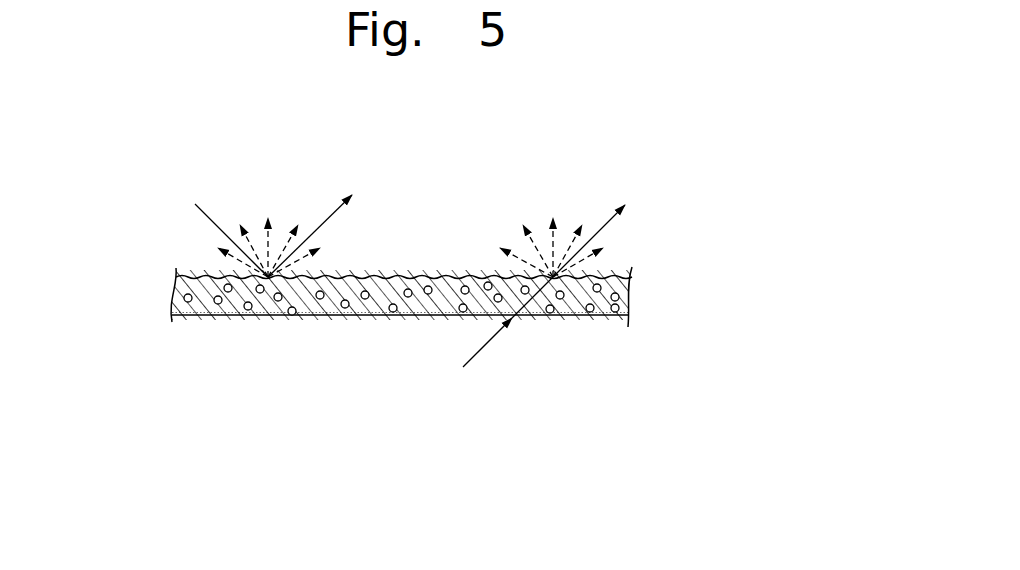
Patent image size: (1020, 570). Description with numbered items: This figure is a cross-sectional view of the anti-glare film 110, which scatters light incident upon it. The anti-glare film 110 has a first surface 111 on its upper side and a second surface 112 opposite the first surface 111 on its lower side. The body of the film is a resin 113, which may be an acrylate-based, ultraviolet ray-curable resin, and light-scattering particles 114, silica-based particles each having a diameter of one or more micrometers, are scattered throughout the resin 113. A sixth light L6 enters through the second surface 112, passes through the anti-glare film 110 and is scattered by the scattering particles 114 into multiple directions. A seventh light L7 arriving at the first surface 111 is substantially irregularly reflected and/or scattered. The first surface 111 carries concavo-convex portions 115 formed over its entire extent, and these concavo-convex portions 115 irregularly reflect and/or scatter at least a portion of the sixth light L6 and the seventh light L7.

The anti-glare film 110 is at (700, 166).
The first surface 111 is at (601, 277).
The second surface 112 is at (600, 315).
The resin 113 is at (624, 283).
The light-scattering particles 114 is at (548, 316).
The concavo-convex portions 115 is at (189, 277).
The sixth light L6 is at (478, 347).
The seventh light L7 is at (198, 208).